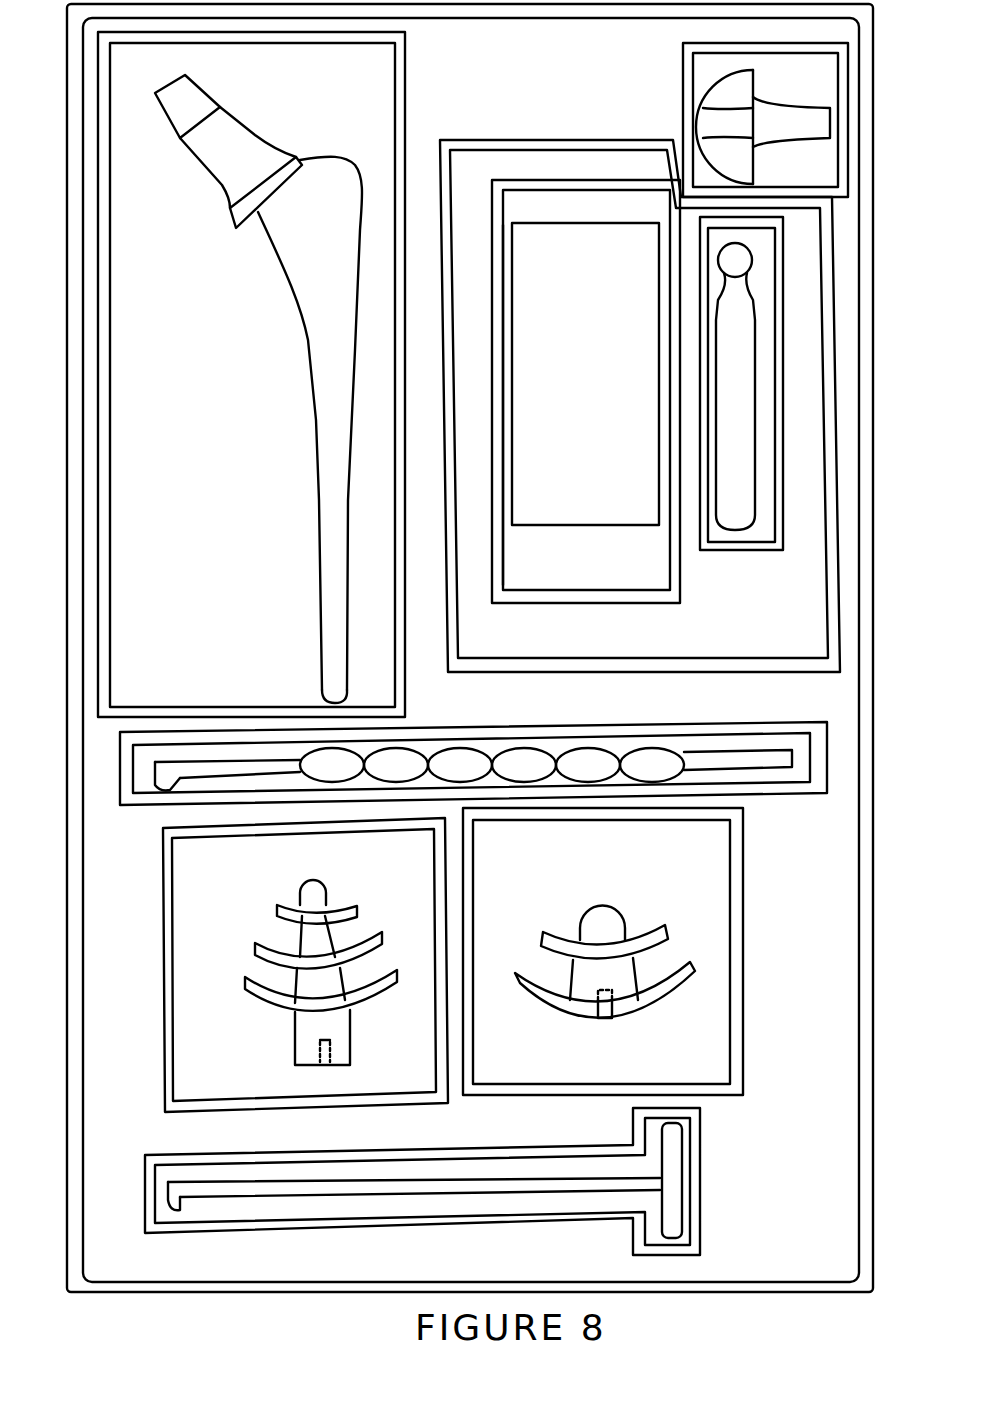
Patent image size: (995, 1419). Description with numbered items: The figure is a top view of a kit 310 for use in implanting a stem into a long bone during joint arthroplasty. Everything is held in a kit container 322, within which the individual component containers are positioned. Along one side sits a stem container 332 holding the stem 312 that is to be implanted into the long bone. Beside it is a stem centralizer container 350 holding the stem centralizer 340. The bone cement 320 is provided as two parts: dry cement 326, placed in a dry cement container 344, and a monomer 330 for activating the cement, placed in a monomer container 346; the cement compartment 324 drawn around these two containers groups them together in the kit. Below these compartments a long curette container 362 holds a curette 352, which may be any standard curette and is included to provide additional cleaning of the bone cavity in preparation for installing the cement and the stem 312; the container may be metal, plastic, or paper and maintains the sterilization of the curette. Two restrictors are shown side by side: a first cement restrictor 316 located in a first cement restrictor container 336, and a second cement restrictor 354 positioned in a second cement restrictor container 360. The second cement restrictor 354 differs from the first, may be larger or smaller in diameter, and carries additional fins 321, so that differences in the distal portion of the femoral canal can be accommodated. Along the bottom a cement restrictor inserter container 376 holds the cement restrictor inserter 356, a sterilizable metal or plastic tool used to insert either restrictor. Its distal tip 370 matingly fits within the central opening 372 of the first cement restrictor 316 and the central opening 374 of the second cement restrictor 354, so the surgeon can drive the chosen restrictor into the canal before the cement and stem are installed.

The kit 310 is at (449, 648).
The stem 312 is at (296, 330).
The first cement restrictor 316 is at (629, 912).
The bone cement 320 is at (580, 171).
The fins 321 is at (277, 910).
The kit container 322 is at (515, 8).
The tray compartment 324 is at (485, 138).
The dry cement 326 is at (634, 478).
The monomer 330 is at (762, 440).
The stem container 332 is at (112, 478).
The first cement restrictor container 336 is at (745, 912).
The stem centralizer 340 is at (760, 103).
The dry cement container 344 is at (501, 248).
The monomer container 346 is at (763, 551).
The stem centralizer container 350 is at (718, 47).
The curette 352 is at (687, 750).
The second cement restrictor 354 is at (307, 972).
The cement restrictor inserter 356 is at (676, 1225).
The second cement restrictor container 360 is at (165, 957).
The curette container 362 is at (672, 722).
The distal tip 370 is at (474, 1180).
The central opening 372 is at (612, 1020).
The central opening 374 is at (323, 1065).
The cement restrictor inserter container 376 is at (557, 1222).